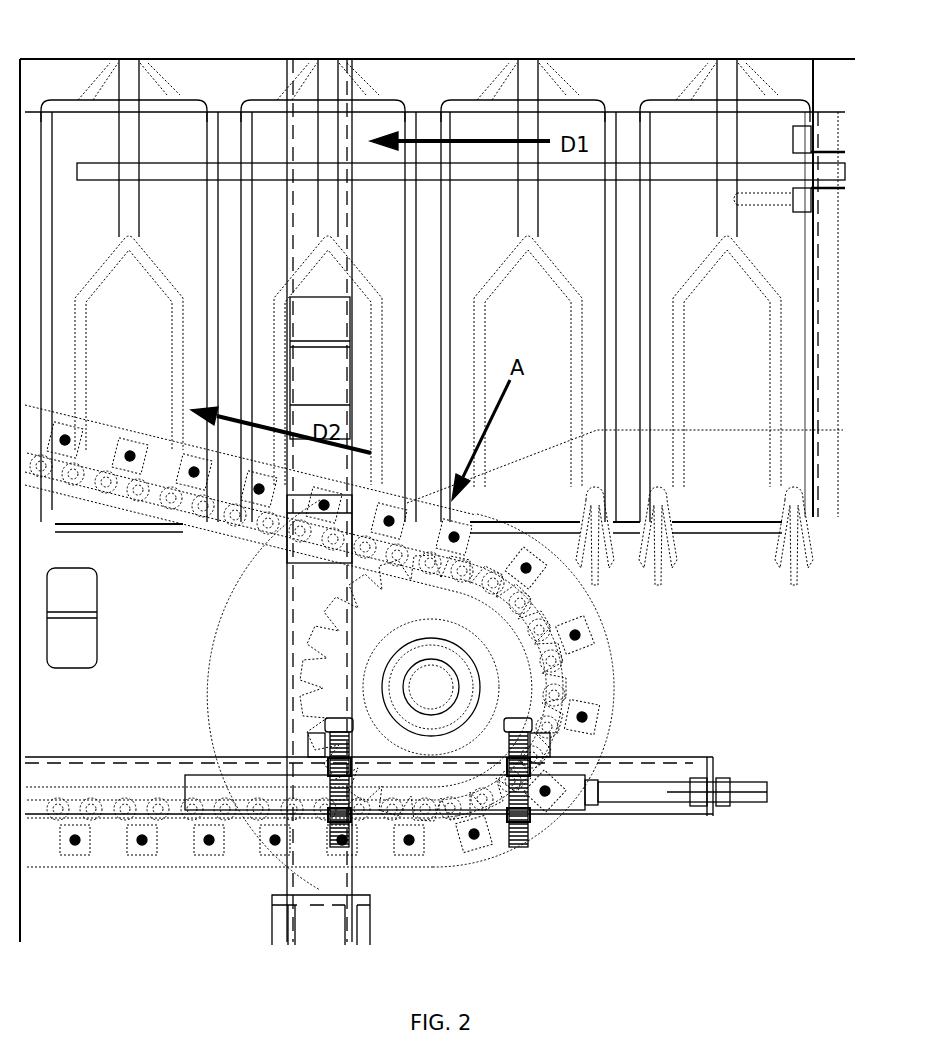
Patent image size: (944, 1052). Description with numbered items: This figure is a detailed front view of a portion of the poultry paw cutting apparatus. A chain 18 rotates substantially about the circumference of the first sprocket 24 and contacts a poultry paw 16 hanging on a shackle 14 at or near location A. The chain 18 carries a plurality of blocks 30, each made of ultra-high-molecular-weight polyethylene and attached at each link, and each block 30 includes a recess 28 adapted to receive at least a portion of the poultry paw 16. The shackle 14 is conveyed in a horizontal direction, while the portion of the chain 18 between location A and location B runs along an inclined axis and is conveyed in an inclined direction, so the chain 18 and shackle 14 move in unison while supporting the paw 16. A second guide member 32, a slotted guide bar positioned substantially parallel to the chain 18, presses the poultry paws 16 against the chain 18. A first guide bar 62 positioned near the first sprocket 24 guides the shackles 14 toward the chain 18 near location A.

The shackle 14 is at (527, 206).
The poultry paw 16 is at (795, 505).
The chain 18 is at (126, 478).
The first sprocket 24 is at (330, 681).
The recess 28 is at (592, 620).
The block 30 is at (597, 652).
The second guide member 32 is at (158, 434).
The first guide bar 62 is at (763, 173).